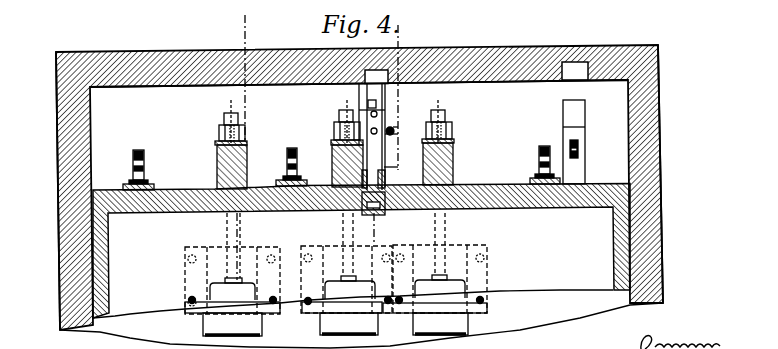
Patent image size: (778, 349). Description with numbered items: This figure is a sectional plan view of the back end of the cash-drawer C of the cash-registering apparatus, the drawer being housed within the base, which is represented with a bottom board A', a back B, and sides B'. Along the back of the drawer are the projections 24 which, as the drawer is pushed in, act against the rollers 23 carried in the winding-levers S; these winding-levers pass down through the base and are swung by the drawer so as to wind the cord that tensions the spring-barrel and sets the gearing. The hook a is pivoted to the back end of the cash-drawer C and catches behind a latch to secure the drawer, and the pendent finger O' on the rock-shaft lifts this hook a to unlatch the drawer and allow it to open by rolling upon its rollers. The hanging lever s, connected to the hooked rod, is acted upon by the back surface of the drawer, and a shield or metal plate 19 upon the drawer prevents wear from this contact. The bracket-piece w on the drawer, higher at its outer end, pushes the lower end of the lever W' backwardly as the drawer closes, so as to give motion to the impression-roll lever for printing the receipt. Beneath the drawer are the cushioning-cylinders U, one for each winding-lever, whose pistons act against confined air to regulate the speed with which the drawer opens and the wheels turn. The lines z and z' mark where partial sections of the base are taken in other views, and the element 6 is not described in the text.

The back B is at (359, 187).
The sides B' is at (360, 187).
The bottom board A' is at (359, 109).
The cash-drawer C is at (361, 266).
The projections 24 is at (334, 166).
The winding-levers S is at (334, 119).
The rollers 23 is at (245, 131).
The shield or metal plate 19 is at (125, 185).
The hanging lever s is at (216, 165).
The screw 6 is at (539, 158).
The hook a is at (388, 112).
The pendent finger O' is at (401, 126).
The lever W' is at (590, 142).
The bracket-piece w is at (574, 118).
The section line z is at (391, 135).
The section line z' is at (248, 147).
The cushioning-cylinder U is at (336, 274).